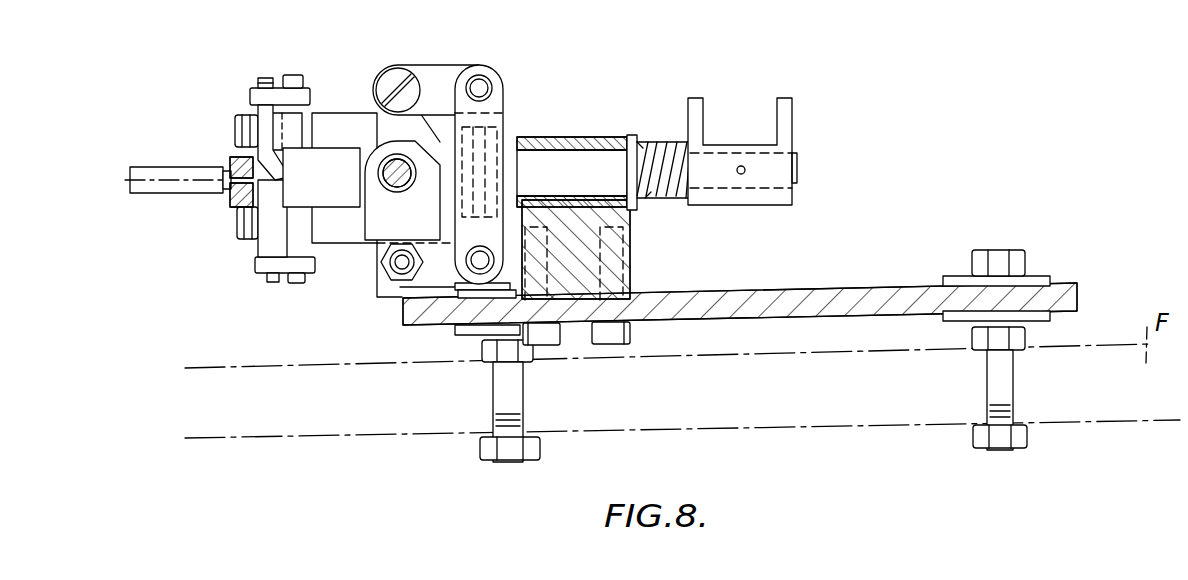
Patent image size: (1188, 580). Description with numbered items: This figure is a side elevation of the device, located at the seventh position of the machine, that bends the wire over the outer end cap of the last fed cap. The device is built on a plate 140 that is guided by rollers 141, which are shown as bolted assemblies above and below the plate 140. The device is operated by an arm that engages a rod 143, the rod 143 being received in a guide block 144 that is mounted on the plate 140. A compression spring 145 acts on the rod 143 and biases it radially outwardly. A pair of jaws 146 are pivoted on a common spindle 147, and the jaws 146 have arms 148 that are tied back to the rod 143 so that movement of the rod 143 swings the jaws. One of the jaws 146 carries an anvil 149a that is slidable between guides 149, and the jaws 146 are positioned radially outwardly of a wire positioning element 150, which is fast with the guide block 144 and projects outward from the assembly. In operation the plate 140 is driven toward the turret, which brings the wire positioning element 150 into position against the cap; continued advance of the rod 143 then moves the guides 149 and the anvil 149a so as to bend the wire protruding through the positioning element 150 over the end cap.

The plate 140 is at (824, 292).
The rollers 141 is at (1032, 278).
The rod 143 is at (646, 180).
The guide block 144 is at (548, 137).
The compression spring 145 is at (655, 140).
The jaws 146 is at (334, 128).
The spindle 147 is at (393, 186).
The arms 148 is at (395, 70).
The guides 149 is at (287, 168).
The anvil 149a is at (262, 192).
The wire positioning element 150 is at (235, 198).